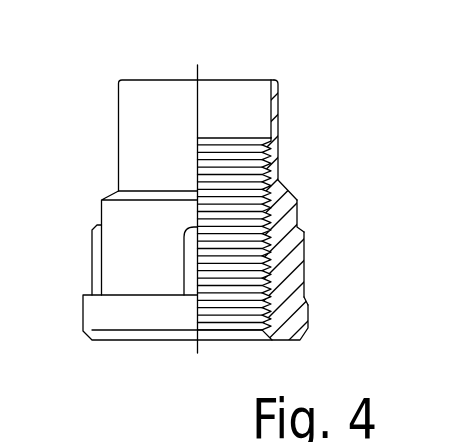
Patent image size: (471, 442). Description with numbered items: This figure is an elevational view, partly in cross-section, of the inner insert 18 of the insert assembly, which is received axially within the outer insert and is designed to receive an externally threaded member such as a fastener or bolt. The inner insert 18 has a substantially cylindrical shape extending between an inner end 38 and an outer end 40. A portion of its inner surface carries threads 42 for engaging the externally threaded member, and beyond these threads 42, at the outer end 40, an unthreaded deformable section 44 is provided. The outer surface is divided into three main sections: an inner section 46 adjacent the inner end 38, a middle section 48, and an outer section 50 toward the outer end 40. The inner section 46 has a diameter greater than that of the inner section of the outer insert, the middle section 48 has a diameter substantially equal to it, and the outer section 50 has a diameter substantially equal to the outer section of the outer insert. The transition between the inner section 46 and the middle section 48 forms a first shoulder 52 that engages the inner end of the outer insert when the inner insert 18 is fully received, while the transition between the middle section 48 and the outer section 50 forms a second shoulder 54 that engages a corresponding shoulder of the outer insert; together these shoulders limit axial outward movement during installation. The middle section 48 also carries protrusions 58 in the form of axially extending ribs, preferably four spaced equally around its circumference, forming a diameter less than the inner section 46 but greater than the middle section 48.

The inner insert 18 is at (102, 218).
The inner end 38 is at (142, 340).
The outer end 40 is at (140, 79).
The threads 42 is at (255, 185).
The unthreaded deformable section 44 is at (272, 103).
The inner section 46 is at (309, 313).
The middle section 48 is at (297, 201).
The outer section 50 is at (278, 98).
The first shoulder 52 is at (306, 294).
The second shoulder 54 is at (280, 190).
The protrusions 58 is at (304, 253).